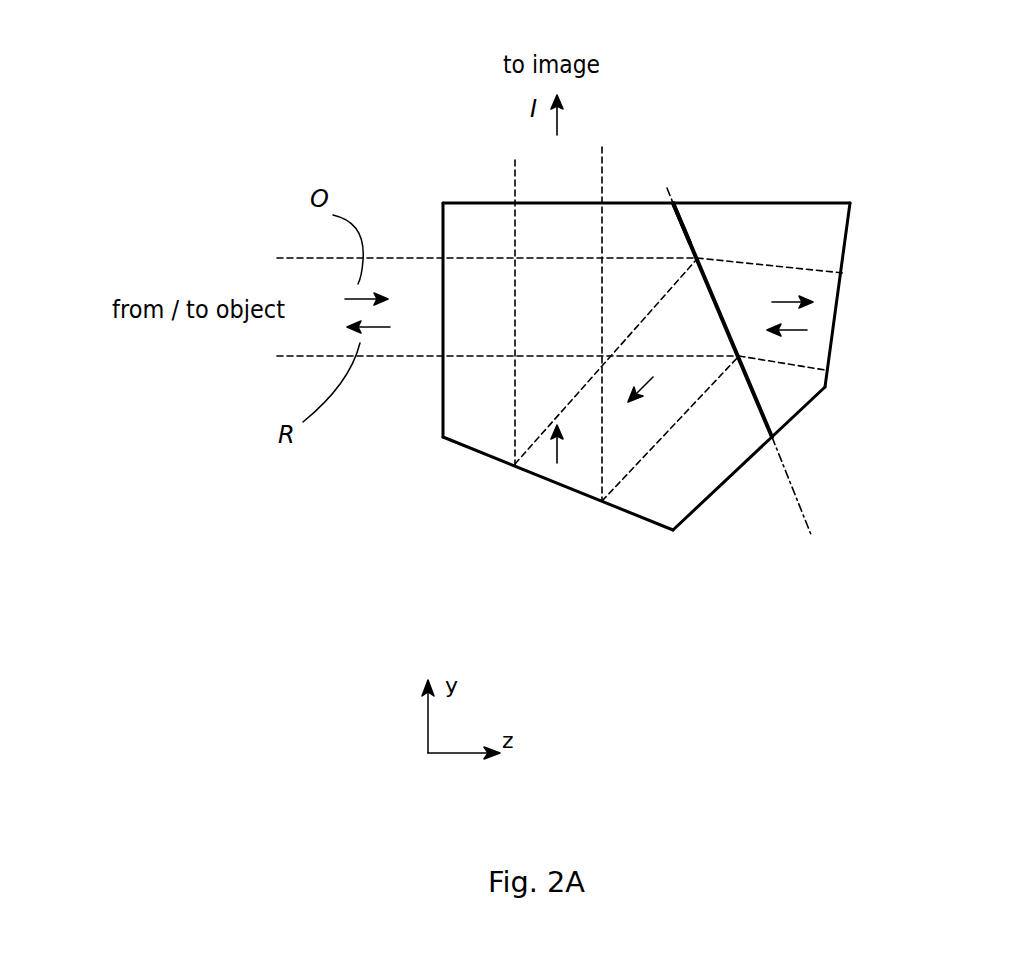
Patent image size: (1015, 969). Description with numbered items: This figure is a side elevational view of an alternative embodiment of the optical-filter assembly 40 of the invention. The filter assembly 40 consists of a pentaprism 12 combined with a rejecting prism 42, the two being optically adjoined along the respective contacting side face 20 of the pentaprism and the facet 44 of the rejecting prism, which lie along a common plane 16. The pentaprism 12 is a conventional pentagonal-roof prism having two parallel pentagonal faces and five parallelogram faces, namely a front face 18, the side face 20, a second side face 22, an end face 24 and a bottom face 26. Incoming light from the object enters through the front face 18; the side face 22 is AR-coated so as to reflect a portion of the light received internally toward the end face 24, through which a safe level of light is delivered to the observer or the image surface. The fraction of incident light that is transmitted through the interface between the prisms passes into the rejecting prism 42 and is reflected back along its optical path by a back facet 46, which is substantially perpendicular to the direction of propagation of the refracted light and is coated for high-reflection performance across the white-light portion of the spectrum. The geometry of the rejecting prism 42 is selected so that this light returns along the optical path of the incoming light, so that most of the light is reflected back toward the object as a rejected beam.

The optical-filter assembly 40 is at (401, 146).
The pentaprism 12 is at (534, 369).
The bottom face 26 is at (839, 389).
The side face 20 is at (712, 271).
The facet 44 is at (683, 224).
The end face 24 is at (488, 203).
The front face 18 is at (442, 400).
The side face 22 is at (473, 452).
The back facet 46 is at (843, 241).
The rejecting prism 42 is at (812, 343).
The common plane 16 is at (797, 493).